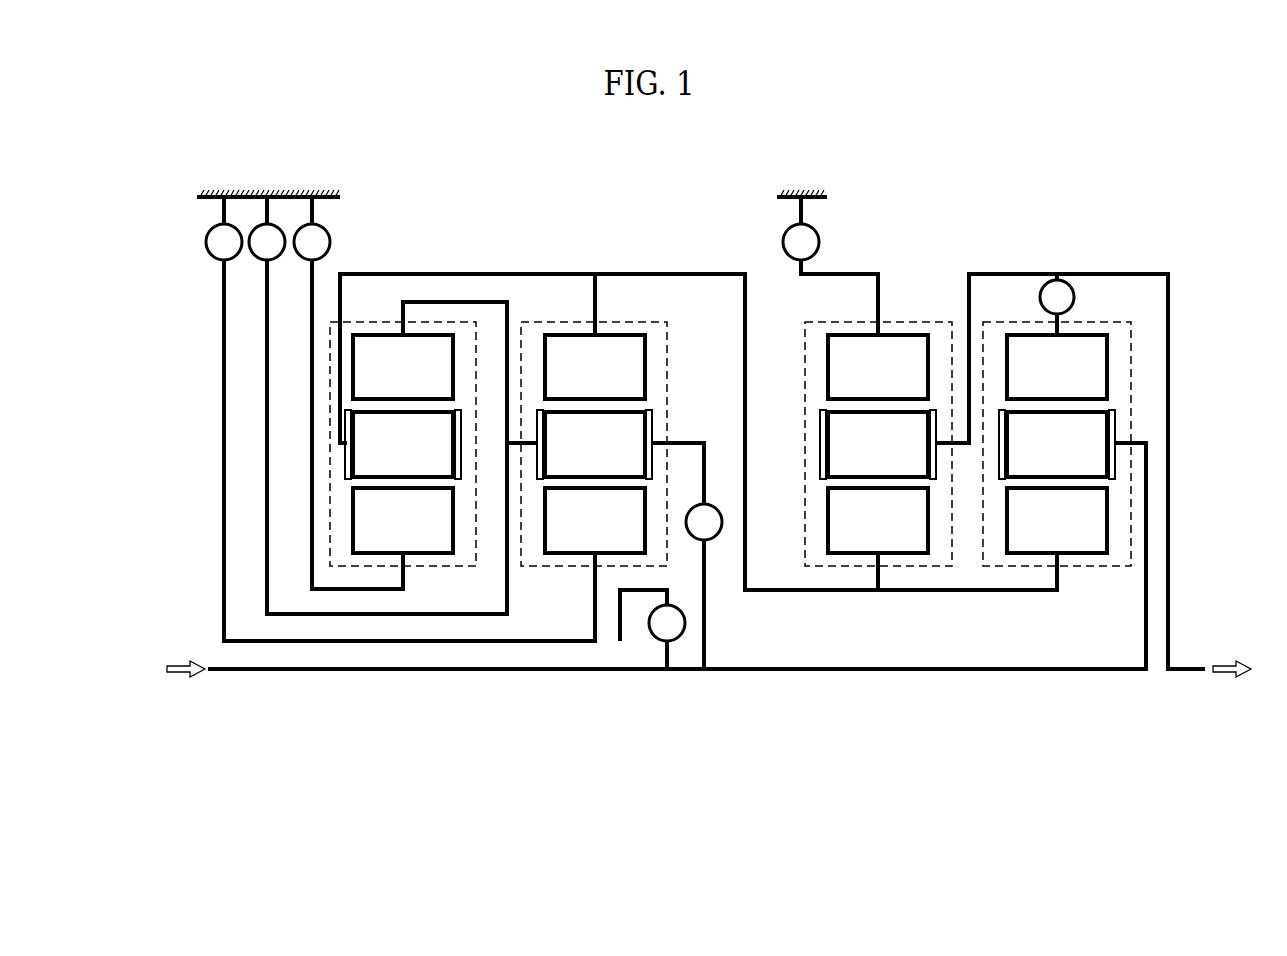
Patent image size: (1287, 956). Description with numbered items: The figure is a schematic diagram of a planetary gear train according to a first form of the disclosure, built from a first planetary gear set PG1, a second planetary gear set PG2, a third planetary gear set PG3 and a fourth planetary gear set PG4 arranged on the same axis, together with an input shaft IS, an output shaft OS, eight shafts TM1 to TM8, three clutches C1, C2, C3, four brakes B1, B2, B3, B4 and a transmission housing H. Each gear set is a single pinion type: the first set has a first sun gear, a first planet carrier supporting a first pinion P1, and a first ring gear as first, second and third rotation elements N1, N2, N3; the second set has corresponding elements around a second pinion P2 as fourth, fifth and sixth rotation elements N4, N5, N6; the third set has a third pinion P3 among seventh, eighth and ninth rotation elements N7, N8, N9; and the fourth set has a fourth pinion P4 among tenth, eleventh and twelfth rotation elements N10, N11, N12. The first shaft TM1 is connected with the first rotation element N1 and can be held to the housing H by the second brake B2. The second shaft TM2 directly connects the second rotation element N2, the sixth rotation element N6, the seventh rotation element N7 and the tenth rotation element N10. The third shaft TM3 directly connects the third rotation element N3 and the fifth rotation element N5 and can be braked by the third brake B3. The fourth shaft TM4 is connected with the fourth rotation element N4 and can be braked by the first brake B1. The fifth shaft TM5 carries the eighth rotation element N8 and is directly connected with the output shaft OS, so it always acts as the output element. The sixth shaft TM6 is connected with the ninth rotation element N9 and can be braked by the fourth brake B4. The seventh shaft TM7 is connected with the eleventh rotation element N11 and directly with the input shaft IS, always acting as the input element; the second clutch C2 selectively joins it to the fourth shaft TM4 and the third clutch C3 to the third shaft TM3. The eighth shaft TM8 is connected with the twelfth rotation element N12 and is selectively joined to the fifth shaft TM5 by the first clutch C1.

The transmission housing H is at (288, 196).
The first brake B1 is at (400, 419).
The second brake B2 is at (348, 393).
The third brake B3 is at (378, 405).
The fourth brake B4 is at (830, 266).
The first clutch C1 is at (1057, 297).
The second clutch C2 is at (652, 629).
The third clutch C3 is at (687, 556).
The first shaft TM1 is at (370, 591).
The second shaft TM2 is at (540, 273).
The third shaft TM3 is at (305, 615).
The fourth shaft TM4 is at (498, 643).
The fifth shaft TM5 is at (1017, 273).
The sixth shaft TM6 is at (857, 273).
The seventh shaft TM7 is at (945, 672).
The eighth shaft TM8 is at (1062, 327).
The input shaft IS is at (247, 672).
The output shaft OS is at (1187, 672).
The first planetary gear set PG1 is at (443, 571).
The second planetary gear set PG2 is at (561, 571).
The third planetary gear set PG3 is at (887, 571).
The fourth planetary gear set PG4 is at (1093, 571).
The first rotation element N1 is at (403, 520).
The second rotation element N2 is at (345, 423).
The third rotation element N3 is at (403, 367).
The fourth rotation element N4 is at (595, 520).
The fifth rotation element N5 is at (653, 428).
The sixth rotation element N6 is at (595, 367).
The seventh rotation element N7 is at (878, 520).
The eighth rotation element N8 is at (820, 434).
The ninth rotation element N9 is at (878, 367).
The tenth rotation element N10 is at (1057, 520).
The eleventh rotation element N11 is at (1116, 426).
The twelfth rotation element N12 is at (1057, 367).
The first pinion P1 is at (407, 444).
The second pinion P2 is at (591, 444).
The third pinion P3 is at (882, 444).
The fourth pinion P4 is at (1053, 444).